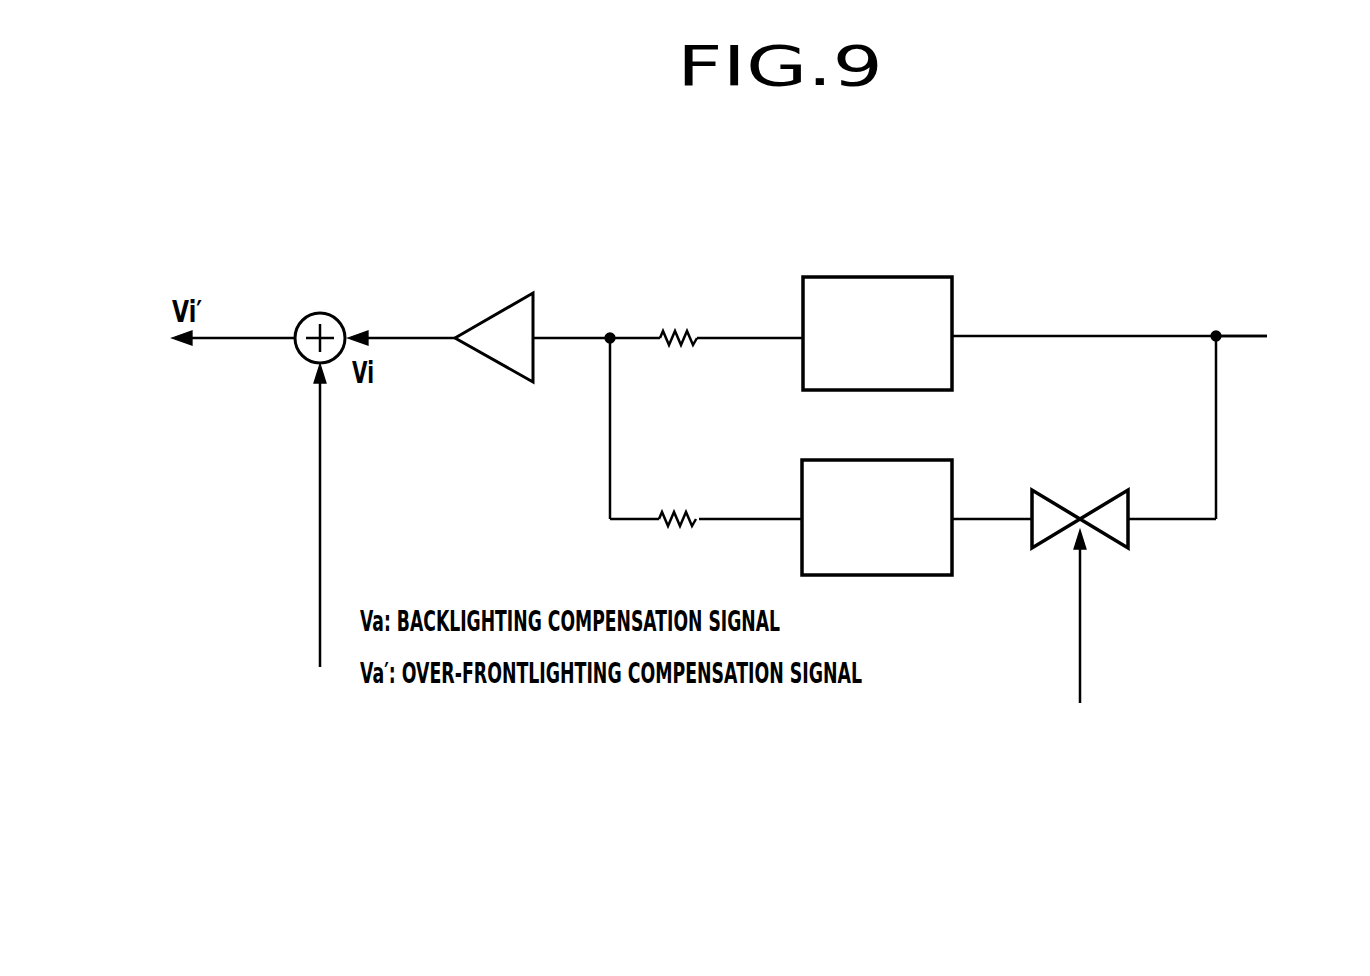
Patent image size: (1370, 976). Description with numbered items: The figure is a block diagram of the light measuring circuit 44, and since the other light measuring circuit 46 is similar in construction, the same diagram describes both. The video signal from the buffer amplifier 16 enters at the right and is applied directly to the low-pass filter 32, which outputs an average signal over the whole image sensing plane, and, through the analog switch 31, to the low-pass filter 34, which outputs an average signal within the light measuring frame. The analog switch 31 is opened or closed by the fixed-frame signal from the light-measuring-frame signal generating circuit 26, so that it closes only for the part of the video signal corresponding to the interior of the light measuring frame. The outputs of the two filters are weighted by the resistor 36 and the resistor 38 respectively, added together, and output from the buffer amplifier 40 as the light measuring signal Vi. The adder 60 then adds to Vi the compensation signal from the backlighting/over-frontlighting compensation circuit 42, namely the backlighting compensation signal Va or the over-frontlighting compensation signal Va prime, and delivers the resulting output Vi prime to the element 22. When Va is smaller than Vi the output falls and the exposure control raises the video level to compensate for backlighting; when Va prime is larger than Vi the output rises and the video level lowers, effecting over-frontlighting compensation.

The adder 60 is at (322, 313).
The buffer amplifier 40 is at (492, 310).
The resistor 36 is at (675, 330).
The resistor 38 is at (680, 510).
The low-pass filter 32 is at (927, 277).
The low-pass filter 34 is at (956, 494).
The analog switch 31 is at (1096, 502).
The light measuring circuit 44 is at (929, 363).
The light measuring circuit 46 is at (900, 387).
The output destination (to 22) 22 is at (197, 342).
The buffer amplifier 16 is at (1288, 341).
The backlighting/over-frontlighting compensation circuit 42 is at (188, 515).
The light-measuring-frame signal generating circuit 26 is at (1119, 678).